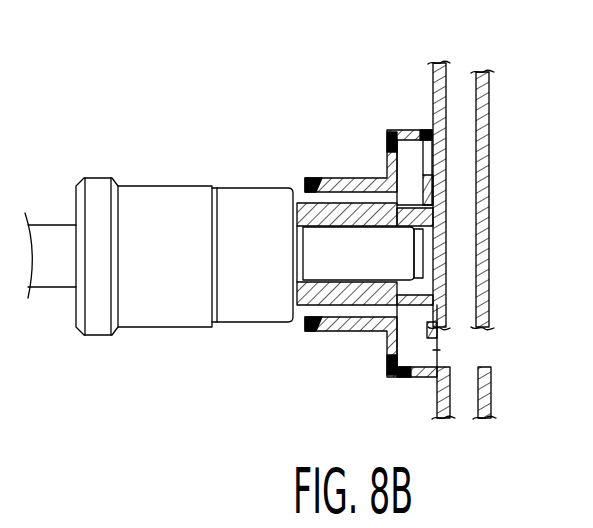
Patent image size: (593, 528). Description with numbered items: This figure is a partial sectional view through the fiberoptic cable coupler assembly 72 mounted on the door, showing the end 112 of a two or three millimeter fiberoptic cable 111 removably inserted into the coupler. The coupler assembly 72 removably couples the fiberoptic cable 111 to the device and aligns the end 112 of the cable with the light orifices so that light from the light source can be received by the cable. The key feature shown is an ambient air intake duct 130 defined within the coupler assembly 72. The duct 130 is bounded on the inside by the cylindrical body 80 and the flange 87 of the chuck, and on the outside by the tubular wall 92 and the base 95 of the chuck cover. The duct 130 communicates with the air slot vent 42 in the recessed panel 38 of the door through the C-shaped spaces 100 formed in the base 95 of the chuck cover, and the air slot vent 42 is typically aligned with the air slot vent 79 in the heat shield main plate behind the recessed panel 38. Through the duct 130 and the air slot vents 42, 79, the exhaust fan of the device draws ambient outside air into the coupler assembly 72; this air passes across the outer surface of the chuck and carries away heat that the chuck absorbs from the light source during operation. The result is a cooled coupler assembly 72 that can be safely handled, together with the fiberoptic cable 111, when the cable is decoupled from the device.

The fiberoptic cable coupler assembly 72 is at (326, 84).
The recessed panel 38 is at (430, 129).
The air slot vent 79 is at (489, 338).
The flange 87 is at (433, 182).
The air slot vent 42 is at (438, 350).
The base 95 is at (413, 377).
The C-shaped spaces 100 is at (410, 153).
The ambient air intake duct 130 is at (352, 177).
The cylindrical body 80 is at (297, 293).
The tubular wall 92 is at (300, 295).
The fiberoptic cable 111 is at (150, 195).
The end 112 is at (320, 248).